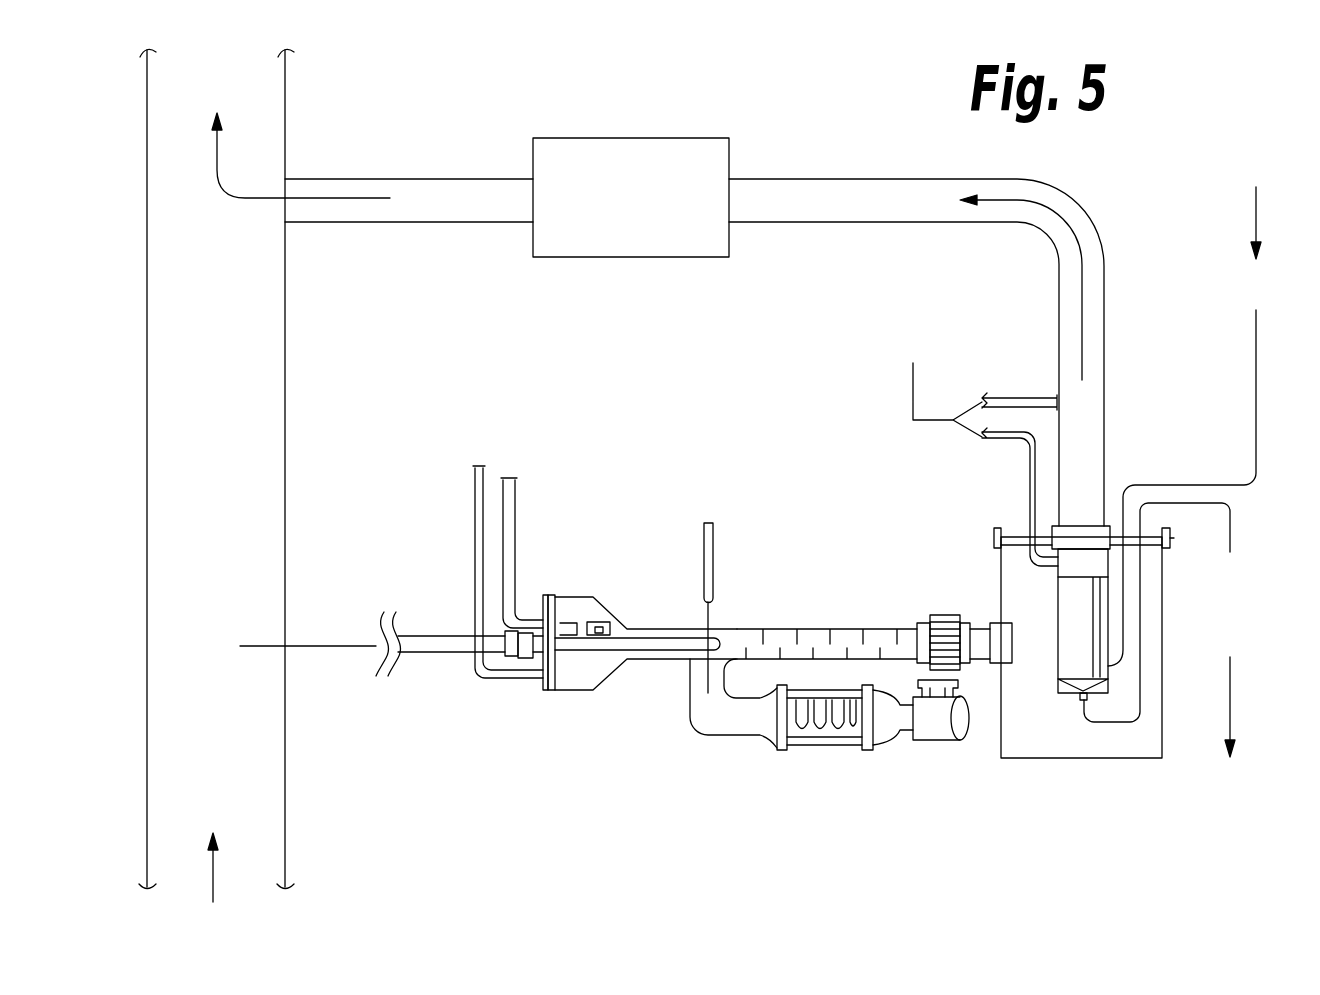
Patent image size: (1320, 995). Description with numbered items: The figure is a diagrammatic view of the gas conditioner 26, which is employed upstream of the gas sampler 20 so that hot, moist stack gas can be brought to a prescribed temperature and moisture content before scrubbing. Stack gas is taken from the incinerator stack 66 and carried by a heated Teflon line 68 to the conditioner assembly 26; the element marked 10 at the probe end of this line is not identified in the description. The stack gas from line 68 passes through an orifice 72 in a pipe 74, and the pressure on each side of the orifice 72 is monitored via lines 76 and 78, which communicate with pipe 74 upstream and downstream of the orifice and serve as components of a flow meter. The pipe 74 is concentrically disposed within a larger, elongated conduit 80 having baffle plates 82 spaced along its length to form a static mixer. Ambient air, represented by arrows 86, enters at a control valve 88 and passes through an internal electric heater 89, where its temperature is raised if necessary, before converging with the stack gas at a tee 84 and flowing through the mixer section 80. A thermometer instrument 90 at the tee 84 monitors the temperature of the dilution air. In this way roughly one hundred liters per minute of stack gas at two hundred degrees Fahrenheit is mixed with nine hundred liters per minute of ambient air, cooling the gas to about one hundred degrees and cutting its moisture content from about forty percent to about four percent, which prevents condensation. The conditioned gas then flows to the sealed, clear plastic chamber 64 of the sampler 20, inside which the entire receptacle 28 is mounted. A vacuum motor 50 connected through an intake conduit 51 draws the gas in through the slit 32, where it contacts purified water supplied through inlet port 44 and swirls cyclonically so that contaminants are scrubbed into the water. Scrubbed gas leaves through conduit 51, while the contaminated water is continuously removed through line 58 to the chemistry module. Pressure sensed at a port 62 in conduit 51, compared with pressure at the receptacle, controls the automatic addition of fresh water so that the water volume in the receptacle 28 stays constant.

The sample probe 10 is at (262, 650).
The gas sampler 20 is at (985, 528).
The gas conditioner 26 is at (620, 736).
The receptacle 28 is at (1045, 668).
The slit 32 is at (1093, 614).
The inlet port 44 is at (1108, 668).
The vacuum motor 50 is at (663, 138).
The intake conduit 51 is at (1104, 318).
The line 58 is at (1100, 722).
The port 62 is at (1057, 396).
The chamber 64 is at (1100, 758).
The incinerator stack 66 is at (147, 322).
The heated Teflon line 68 is at (455, 656).
The orifice 72 is at (580, 650).
The pipe 74 is at (640, 628).
The line 76 is at (515, 545).
The line 78 is at (475, 540).
The elongated conduit 80 is at (766, 629).
The baffle plates 82 is at (873, 650).
The tee 84 is at (690, 672).
The ambient air arrows 86 is at (978, 732).
The control valve 88 is at (985, 680).
The internal electric heater 89 is at (807, 727).
The thermometer instrument 90 is at (713, 565).